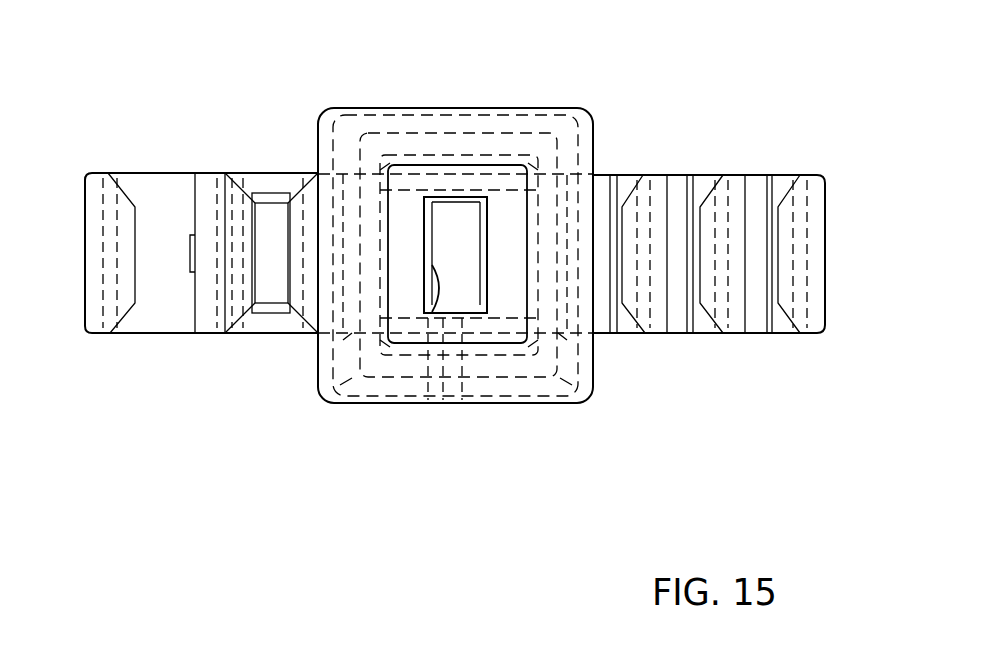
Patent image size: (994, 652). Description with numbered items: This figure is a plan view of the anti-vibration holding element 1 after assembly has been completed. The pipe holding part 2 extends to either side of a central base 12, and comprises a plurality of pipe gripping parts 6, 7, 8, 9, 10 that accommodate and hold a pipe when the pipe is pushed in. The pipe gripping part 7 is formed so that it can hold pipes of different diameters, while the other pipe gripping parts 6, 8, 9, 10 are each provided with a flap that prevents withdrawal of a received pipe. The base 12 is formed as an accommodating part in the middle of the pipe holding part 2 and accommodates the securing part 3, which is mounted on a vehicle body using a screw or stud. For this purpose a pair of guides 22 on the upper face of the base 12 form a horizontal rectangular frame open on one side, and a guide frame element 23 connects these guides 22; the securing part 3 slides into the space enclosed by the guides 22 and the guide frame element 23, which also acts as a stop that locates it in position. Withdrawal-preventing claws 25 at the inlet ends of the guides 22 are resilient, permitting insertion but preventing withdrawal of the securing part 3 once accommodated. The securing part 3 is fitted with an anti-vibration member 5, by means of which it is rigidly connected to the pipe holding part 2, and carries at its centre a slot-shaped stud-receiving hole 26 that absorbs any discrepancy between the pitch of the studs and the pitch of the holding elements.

The anti-vibration holding element 1 is at (620, 118).
The pipe holding part 2 is at (632, 175).
The securing part 3 is at (400, 107).
The anti-vibration member 5 is at (430, 403).
The pipe gripping part 6 is at (163, 195).
The pipe gripping part 7 is at (272, 185).
The pipe gripping part 8 is at (623, 333).
The pipe gripping part 9 is at (705, 333).
The pipe gripping part 10 is at (783, 333).
The base 12 is at (533, 107).
The guides 22 is at (332, 348).
The guide frame element 23 is at (448, 115).
The withdrawal-preventing claws 25 is at (542, 403).
The stud-receiving hole 26 is at (432, 313).